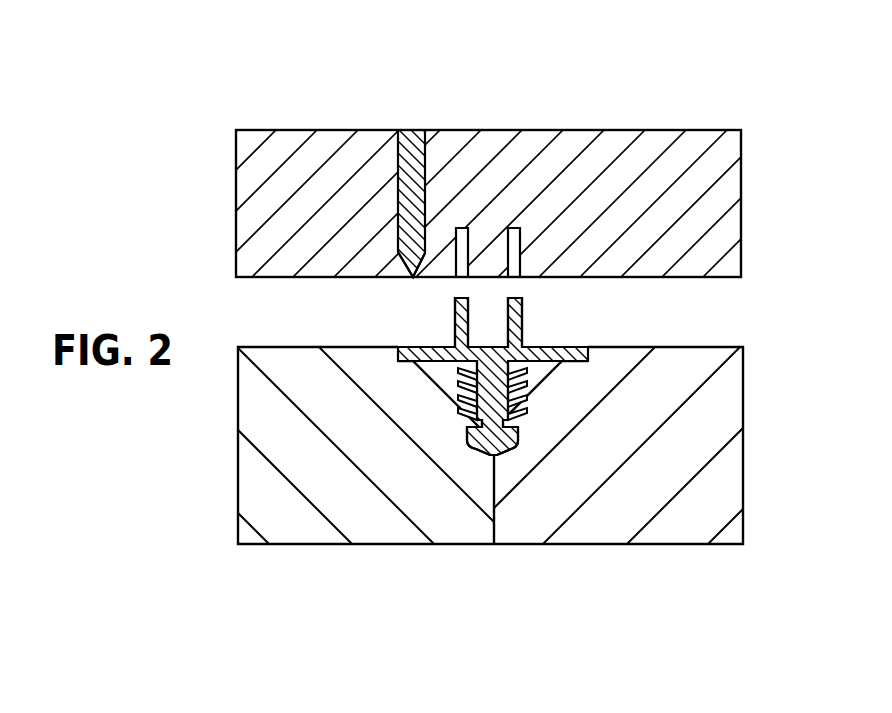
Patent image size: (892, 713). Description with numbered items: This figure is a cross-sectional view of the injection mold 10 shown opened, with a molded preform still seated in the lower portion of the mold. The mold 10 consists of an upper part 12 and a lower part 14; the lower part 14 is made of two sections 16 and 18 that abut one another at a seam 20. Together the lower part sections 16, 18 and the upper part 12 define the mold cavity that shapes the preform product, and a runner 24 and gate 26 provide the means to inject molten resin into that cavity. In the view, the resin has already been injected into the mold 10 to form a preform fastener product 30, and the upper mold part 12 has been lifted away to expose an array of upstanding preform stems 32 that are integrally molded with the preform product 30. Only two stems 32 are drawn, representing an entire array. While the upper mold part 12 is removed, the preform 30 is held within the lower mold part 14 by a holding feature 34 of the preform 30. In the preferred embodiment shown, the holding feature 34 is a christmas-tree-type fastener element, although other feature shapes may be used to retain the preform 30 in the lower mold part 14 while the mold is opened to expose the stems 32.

The injection mold 10 is at (398, 64).
The upper part 12 is at (583, 129).
The lower part 14 is at (573, 561).
The lower part section 16 is at (363, 423).
The lower part section 18 is at (628, 450).
The seam 20 is at (492, 475).
The runner 24 is at (427, 160).
The gate 26 is at (414, 277).
The preform fastener product 30 is at (563, 346).
The preform stems 32 is at (455, 317).
The holding feature 34 is at (475, 422).